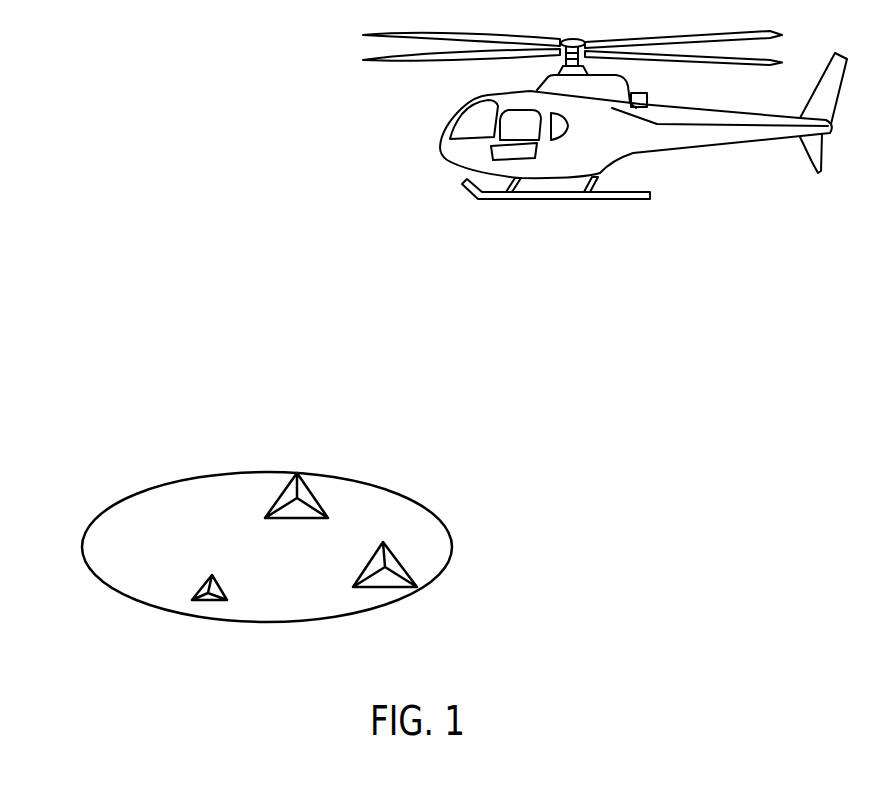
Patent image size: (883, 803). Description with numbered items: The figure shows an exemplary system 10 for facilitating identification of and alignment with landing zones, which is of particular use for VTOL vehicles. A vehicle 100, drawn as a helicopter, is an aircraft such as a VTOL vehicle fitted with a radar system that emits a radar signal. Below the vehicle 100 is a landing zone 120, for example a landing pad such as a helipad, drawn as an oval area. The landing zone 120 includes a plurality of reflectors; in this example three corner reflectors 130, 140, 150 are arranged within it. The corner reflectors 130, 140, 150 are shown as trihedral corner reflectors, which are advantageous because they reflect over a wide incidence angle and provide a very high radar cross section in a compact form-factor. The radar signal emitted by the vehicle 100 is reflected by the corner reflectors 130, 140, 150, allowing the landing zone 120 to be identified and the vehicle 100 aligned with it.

The system 10 is at (437, 326).
The vehicle 100 is at (572, 160).
The landing zone 120 is at (145, 498).
The corner reflector 130 is at (302, 480).
The corner reflector 140 is at (378, 562).
The corner reflector 150 is at (210, 578).